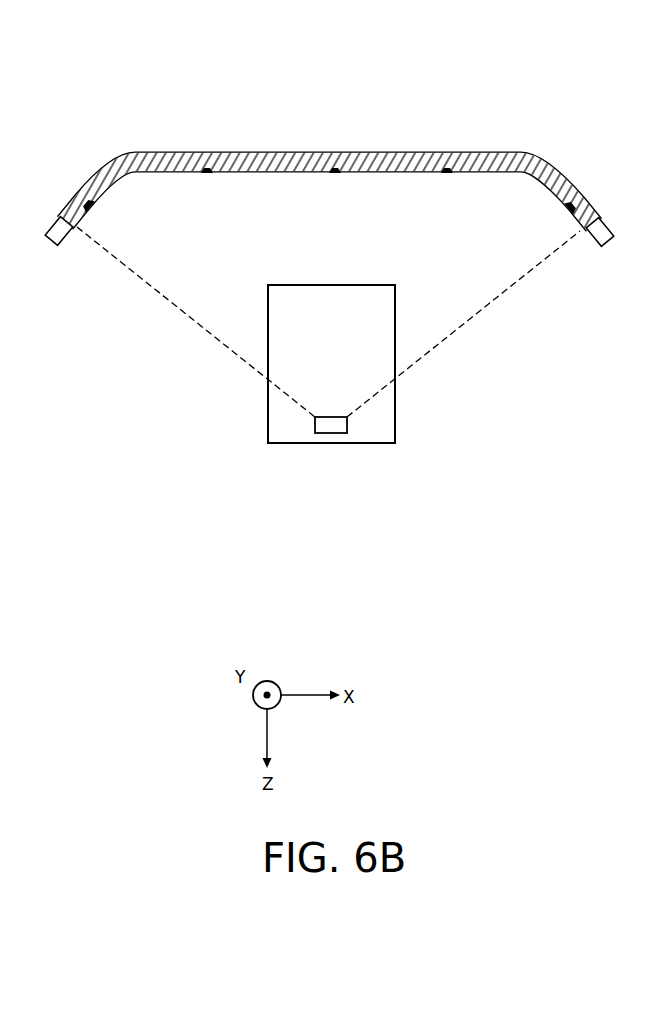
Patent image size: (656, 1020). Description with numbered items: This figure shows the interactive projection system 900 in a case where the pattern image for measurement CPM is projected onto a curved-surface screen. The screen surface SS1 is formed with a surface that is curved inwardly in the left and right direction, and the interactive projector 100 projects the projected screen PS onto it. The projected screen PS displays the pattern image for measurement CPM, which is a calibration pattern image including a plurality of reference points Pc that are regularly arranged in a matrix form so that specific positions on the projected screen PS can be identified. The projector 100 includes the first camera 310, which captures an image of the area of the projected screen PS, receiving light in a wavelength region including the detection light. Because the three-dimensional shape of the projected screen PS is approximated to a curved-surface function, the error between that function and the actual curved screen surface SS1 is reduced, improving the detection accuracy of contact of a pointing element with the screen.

The interactive projection system 900 is at (551, 120).
The screen surface SS1 is at (54, 245).
The reference points Pc is at (93, 205).
The projected screen PS is at (121, 176).
The pattern image for measurement CPM is at (19, 398).
The interactive projector 100 is at (396, 425).
The first camera 310 is at (315, 423).